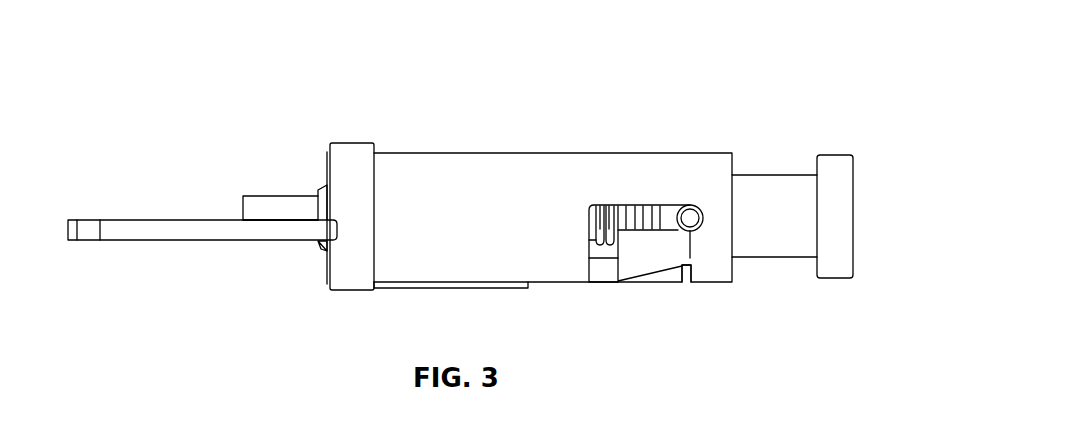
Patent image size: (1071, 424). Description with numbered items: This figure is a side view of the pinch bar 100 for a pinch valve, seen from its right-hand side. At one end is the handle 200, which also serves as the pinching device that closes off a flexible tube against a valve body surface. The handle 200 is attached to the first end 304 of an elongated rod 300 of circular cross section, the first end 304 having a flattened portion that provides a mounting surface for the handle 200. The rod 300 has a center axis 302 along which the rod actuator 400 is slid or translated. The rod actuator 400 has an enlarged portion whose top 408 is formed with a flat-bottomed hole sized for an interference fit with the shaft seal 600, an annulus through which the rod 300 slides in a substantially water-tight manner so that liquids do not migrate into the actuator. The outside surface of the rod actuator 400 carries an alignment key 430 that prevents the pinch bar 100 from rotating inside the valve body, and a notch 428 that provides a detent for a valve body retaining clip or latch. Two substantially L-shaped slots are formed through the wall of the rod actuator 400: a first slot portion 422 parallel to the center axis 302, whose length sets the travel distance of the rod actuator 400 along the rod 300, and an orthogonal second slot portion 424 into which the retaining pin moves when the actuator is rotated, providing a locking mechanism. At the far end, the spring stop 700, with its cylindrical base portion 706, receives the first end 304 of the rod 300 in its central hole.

The pinch bar 100 is at (768, 32).
The handle 200 is at (163, 240).
The rod 300 is at (267, 199).
The center axis 302 is at (703, 210).
The first end 304 is at (280, 219).
The rod actuator 400 is at (502, 165).
The top 408 is at (322, 279).
The first slot portion 422 is at (618, 207).
The second slot portion 424 is at (605, 270).
The notch 428 is at (682, 278).
The alignment key 430 is at (448, 290).
The shaft seal 600 is at (320, 188).
The spring stop 700 is at (770, 248).
The base portion 706 is at (837, 280).